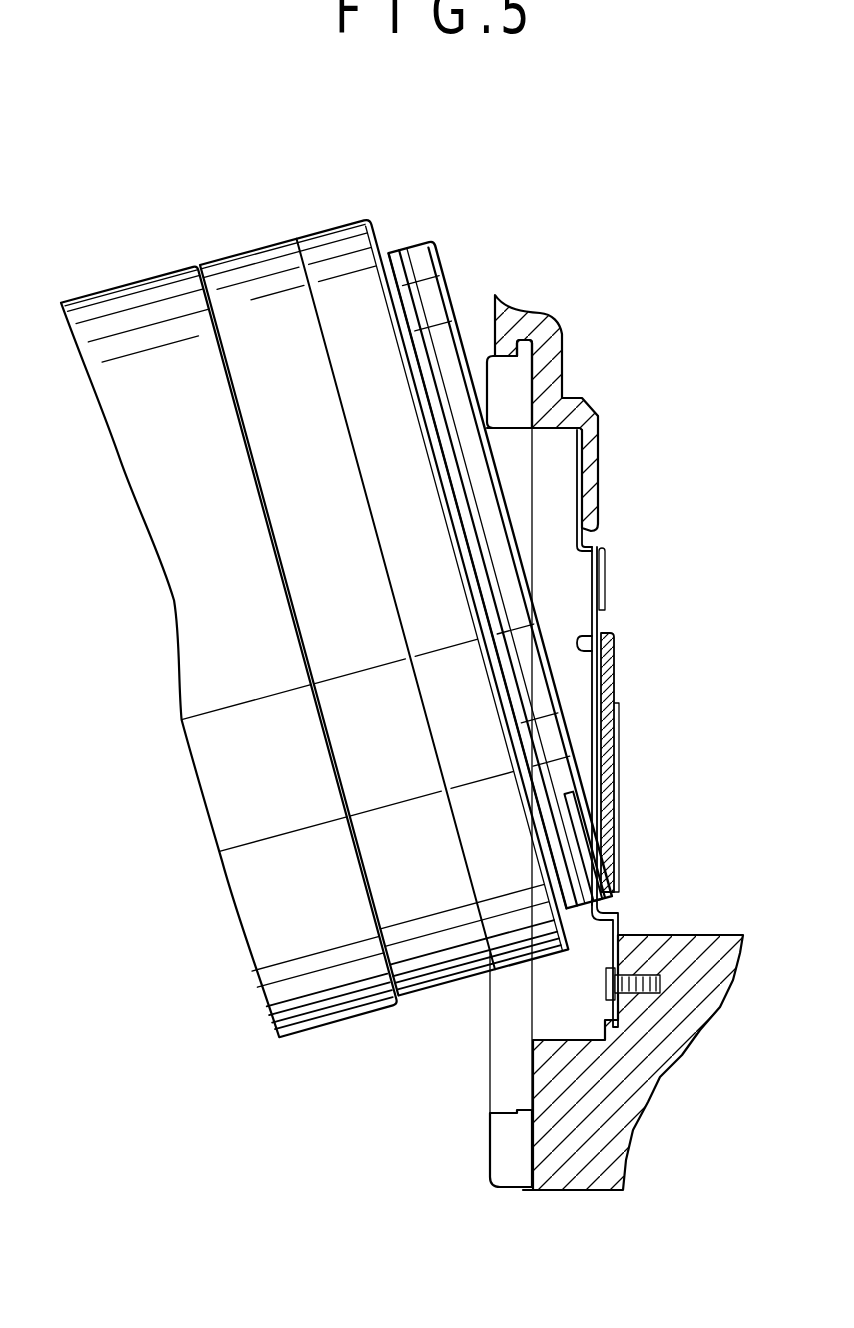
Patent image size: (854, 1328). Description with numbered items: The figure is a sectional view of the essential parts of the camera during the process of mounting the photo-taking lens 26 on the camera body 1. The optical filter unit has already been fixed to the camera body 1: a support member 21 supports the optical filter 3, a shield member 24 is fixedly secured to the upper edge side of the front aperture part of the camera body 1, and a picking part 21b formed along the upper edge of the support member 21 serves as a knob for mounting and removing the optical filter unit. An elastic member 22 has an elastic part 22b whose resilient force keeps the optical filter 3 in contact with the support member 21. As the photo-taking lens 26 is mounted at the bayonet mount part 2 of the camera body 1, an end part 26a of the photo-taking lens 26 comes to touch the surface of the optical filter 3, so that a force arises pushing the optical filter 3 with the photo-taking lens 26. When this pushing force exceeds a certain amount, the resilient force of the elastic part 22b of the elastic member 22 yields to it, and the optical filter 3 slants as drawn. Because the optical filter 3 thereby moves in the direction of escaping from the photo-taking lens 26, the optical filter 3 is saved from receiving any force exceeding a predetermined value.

The camera body 1 is at (553, 365).
The bayonet mount part 2 is at (500, 390).
The optical filter 3 is at (612, 687).
The support member 21 is at (733, 913).
The picking part 21b is at (600, 637).
The elastic member 22 is at (710, 860).
The elastic part 22b is at (619, 808).
The shield member 24 is at (577, 517).
The photo-taking lens 26 is at (423, 988).
The end part 26a is at (598, 910).